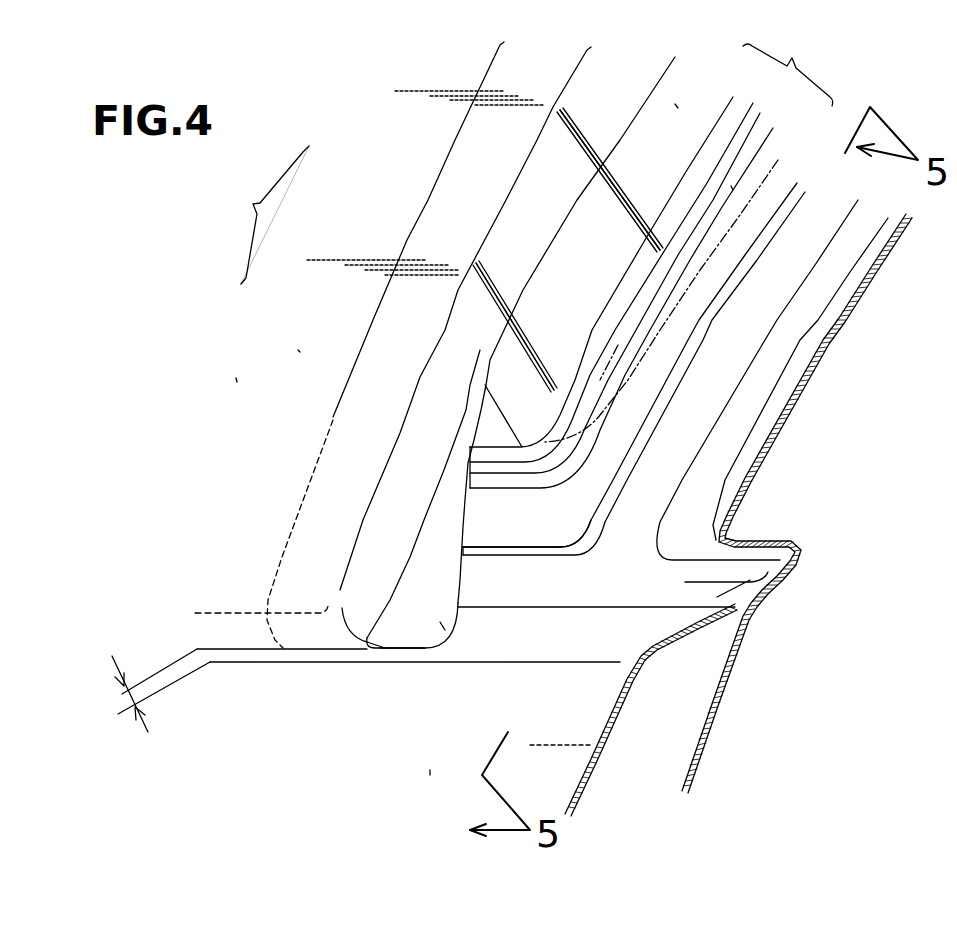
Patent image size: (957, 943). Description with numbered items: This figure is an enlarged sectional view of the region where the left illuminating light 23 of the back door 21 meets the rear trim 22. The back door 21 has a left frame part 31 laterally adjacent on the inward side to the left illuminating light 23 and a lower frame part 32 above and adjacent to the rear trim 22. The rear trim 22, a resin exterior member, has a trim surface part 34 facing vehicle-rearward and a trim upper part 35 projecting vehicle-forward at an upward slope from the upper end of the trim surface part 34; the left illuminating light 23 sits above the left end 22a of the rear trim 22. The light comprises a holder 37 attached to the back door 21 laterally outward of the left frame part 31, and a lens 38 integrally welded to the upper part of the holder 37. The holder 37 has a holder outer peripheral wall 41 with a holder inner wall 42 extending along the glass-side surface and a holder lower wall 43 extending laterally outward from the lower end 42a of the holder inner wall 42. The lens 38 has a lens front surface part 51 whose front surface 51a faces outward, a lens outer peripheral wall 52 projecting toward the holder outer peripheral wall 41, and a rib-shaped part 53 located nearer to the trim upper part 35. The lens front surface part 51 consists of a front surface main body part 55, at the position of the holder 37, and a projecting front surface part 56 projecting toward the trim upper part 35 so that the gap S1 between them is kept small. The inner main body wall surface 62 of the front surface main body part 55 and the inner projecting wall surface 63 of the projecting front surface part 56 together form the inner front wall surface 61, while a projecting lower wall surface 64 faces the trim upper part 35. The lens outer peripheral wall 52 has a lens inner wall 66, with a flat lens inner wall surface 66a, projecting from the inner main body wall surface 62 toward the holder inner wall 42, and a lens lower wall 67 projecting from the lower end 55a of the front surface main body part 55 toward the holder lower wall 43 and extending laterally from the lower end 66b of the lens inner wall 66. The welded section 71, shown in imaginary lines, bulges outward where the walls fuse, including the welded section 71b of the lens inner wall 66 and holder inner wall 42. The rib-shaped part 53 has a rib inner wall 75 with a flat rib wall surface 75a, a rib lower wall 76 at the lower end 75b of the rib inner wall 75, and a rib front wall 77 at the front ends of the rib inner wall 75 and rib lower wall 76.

The back door 21 is at (822, 366).
The rear trim 22 is at (430, 770).
The left end of the rear trim 22a is at (240, 727).
The left illuminating light 23 is at (788, 70).
The left frame part 31 is at (840, 320).
The lower frame part 32 is at (783, 580).
The trim surface part 34 is at (352, 750).
The trim upper part 35 is at (578, 652).
The holder 37 is at (733, 184).
The lens 38 is at (678, 100).
The holder outer peripheral wall 41 is at (640, 413).
The holder inner wall 42 is at (668, 352).
The lower end of the holder inner wall 42a is at (580, 502).
The holder lower wall 43 is at (530, 540).
The lens front surface part 51 is at (270, 215).
The front surface 51a is at (237, 382).
The lens outer peripheral wall 52 is at (580, 288).
The rib-shaped part 53 is at (443, 630).
The front surface main body part 55 is at (385, 197).
The lower end of the front surface main body part 55a is at (427, 366).
The projecting front surface part 56 is at (298, 350).
The inner front wall surface 61 is at (406, 246).
The inner main body wall surface 62 is at (556, 110).
The inner projecting wall surface 63 is at (397, 487).
The projecting lower wall surface 64 is at (253, 640).
The lens inner wall 66 is at (608, 233).
The lens inner wall surface 66a is at (624, 171).
The lower end of the lens inner wall 66b is at (513, 405).
The lens lower wall 67 is at (492, 437).
The welded section 71 is at (670, 267).
The welded section of the lens inner wall and the holder inner wall 71b is at (607, 365).
The rib inner wall 75 is at (447, 585).
The rib wall surface 75a is at (437, 557).
The lower end of the rib inner wall 75b is at (403, 640).
The rib lower wall 76 is at (385, 650).
The rib front wall 77 is at (468, 533).
The gap S1 is at (118, 690).